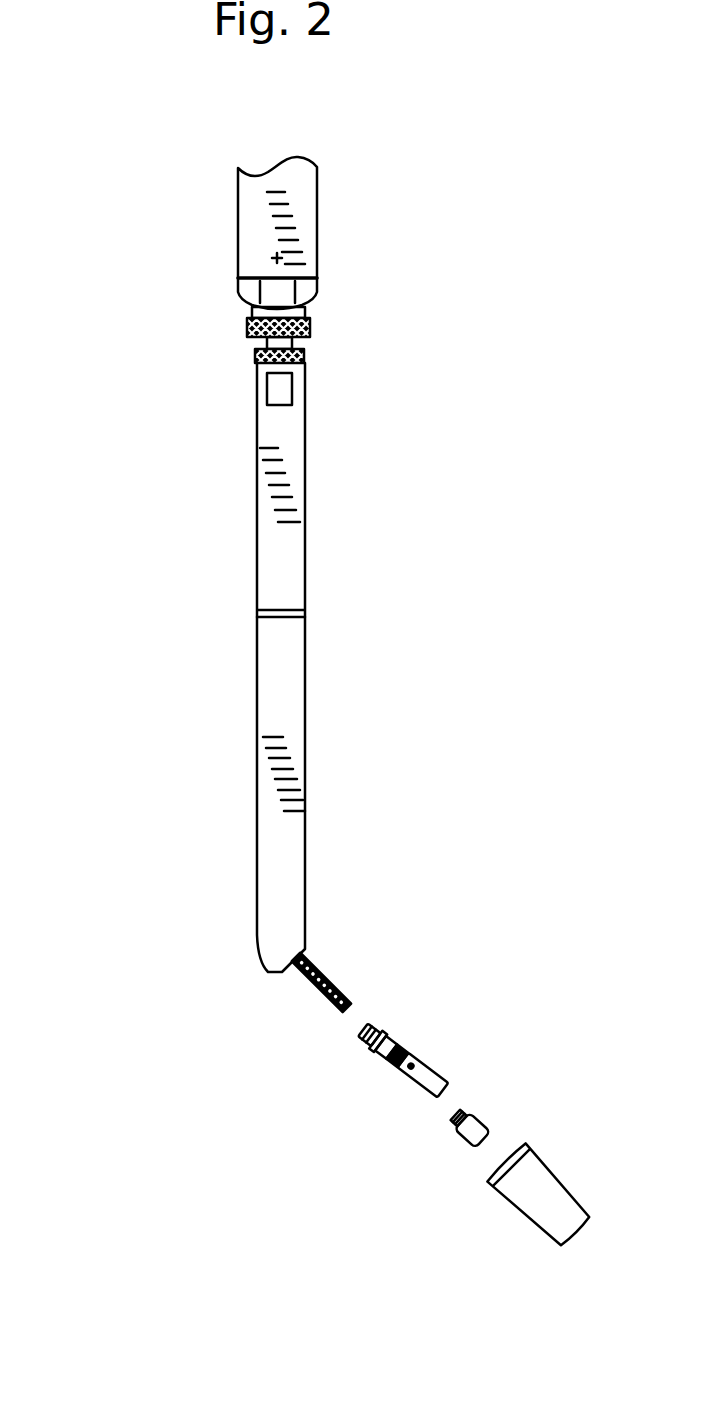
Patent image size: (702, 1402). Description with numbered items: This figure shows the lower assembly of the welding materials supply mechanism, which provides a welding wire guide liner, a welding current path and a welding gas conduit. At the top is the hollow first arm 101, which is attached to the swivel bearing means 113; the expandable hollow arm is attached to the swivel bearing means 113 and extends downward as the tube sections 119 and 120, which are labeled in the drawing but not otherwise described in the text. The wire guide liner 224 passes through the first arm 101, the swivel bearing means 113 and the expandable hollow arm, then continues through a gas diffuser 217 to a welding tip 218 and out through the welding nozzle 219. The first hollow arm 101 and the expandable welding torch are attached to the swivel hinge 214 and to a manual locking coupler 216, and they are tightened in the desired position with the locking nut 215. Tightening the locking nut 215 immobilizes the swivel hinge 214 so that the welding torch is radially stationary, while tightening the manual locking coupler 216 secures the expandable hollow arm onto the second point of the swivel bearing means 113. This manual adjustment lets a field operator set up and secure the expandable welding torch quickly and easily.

The hollow first arm 101 is at (237, 205).
The swivel bearing means 113 is at (242, 333).
The upper tube section 119 is at (257, 488).
The lower tube section 120 is at (262, 725).
The swivel hinge 214 is at (318, 288).
The locking nut 215 is at (340, 322).
The manual locking coupler 216 is at (305, 357).
The gas diffuser 217 is at (395, 1075).
The welding tip 218 is at (463, 1138).
The welding nozzle 219 is at (502, 1203).
The wire guide liner 224 is at (323, 997).